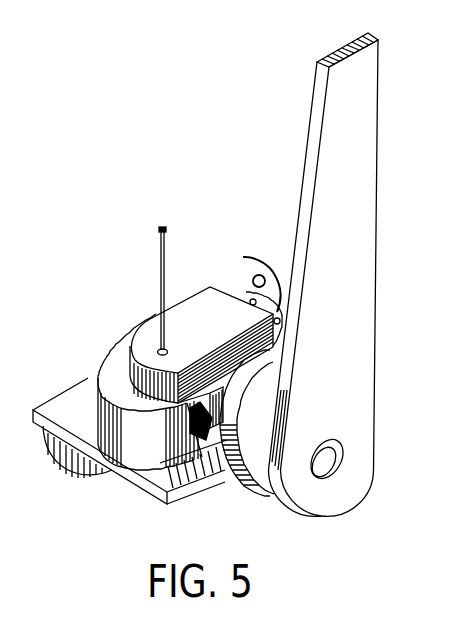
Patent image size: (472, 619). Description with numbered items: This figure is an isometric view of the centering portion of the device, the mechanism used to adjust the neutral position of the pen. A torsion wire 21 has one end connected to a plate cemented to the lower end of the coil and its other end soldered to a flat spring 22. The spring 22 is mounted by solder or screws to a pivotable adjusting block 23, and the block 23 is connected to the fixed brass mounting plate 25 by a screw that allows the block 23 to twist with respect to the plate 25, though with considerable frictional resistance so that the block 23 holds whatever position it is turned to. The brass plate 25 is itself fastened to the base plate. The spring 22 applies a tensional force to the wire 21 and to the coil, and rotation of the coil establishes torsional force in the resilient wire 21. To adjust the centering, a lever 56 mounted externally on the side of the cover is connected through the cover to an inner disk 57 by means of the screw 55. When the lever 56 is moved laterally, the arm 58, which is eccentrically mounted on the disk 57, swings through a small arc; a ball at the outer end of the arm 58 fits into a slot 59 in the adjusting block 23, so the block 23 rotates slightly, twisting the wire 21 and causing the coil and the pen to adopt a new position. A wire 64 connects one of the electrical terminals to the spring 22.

The torsion wire 21 is at (160, 253).
The flat spring 22 is at (185, 310).
The pivotable adjusting block 23 is at (88, 485).
The fixed brass mounting plate 25 is at (60, 470).
The screw 55 is at (346, 453).
The lever 56 is at (373, 325).
The inner disk 57 is at (243, 467).
The arm 58 is at (137, 438).
The slot 59 is at (178, 495).
The wire 64 is at (262, 256).